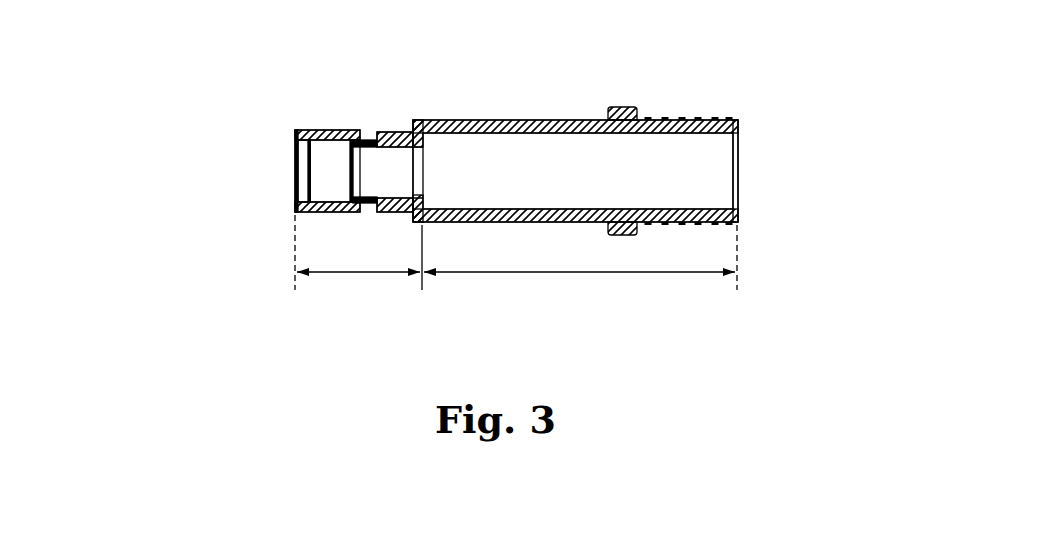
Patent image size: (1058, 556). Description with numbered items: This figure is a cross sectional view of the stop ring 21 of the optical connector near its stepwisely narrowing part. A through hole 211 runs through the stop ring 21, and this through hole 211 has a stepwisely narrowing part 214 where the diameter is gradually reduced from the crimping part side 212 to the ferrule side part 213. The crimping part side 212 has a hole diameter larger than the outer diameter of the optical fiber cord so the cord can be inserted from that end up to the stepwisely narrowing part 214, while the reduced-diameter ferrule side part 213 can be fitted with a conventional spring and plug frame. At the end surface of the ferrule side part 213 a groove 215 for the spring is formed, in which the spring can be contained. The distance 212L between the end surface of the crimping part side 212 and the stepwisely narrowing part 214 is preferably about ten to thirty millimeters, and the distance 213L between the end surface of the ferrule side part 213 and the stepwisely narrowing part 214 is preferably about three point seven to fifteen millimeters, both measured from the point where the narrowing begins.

The stop ring 21 is at (476, 119).
The through hole 211 is at (490, 147).
The crimping part side 212 is at (663, 120).
The ferrule side part 213 is at (343, 130).
The stepwisely narrowing part 214 is at (407, 132).
The groove for the spring 215 is at (327, 202).
The distance between the end surface of the ferrule side part and the stepwisely nar 213L is at (340, 272).
The distance between the end surface of the crimping part side and the stepwisely na 212L is at (528, 273).